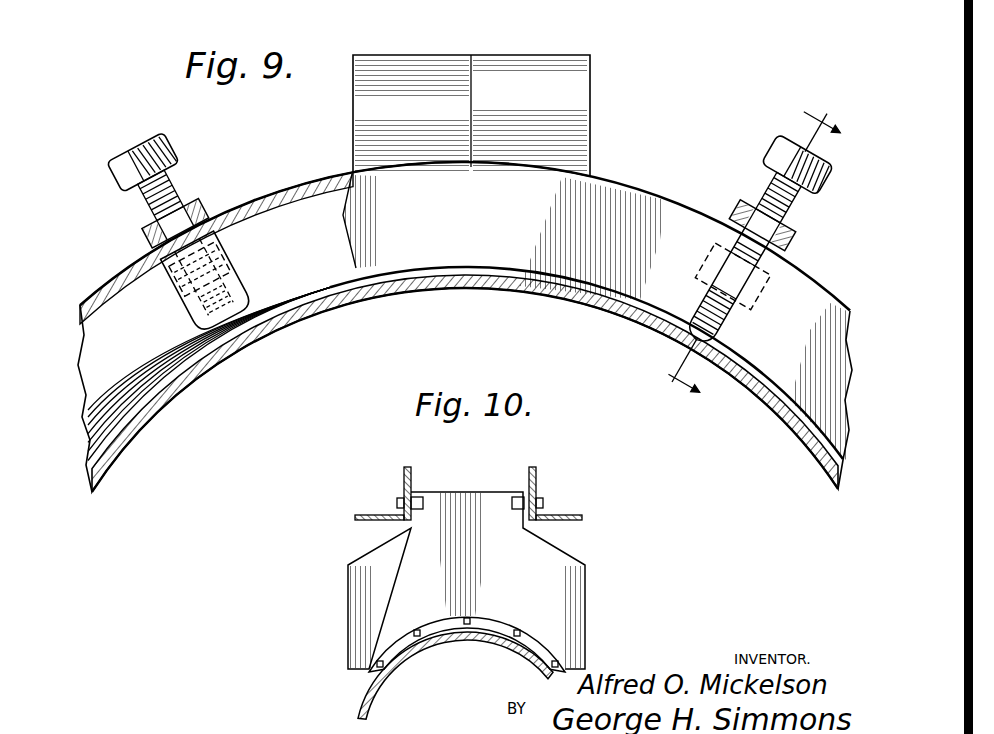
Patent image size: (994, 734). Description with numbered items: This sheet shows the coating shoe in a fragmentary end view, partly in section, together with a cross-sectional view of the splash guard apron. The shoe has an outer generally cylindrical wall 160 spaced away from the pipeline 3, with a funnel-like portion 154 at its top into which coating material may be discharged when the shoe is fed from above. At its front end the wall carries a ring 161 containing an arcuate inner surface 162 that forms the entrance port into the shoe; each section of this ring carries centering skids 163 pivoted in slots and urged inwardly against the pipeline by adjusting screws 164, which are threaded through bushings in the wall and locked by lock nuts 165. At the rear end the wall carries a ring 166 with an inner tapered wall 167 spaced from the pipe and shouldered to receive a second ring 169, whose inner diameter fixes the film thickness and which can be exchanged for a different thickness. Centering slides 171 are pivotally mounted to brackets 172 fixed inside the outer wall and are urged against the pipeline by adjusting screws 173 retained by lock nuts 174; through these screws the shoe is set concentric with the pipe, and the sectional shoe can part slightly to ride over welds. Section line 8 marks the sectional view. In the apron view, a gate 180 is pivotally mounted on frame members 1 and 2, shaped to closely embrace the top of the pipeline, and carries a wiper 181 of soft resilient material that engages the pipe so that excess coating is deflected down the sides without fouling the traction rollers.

In FIG. 9, the funnel-like portion 154 is at (578, 77).
In FIG. 9, the outer cylindrical wall 160 is at (267, 197).
In FIG. 9, the ring 161 is at (620, 197).
In FIG. 9, the arcuate inner surface 162 is at (525, 276).
In FIG. 9, the centering skids 163 is at (737, 323).
In FIG. 9, the adjusting screws 164 is at (788, 151).
In FIG. 9, the lock nuts 165 is at (797, 242).
In FIG. 9, the ring 166 is at (308, 207).
In FIG. 9, the inner tapered wall 167 is at (327, 265).
In FIG. 9, the second ring 169 is at (153, 370).
In FIG. 9, the centering slides 171 is at (250, 346).
In FIG. 9, the brackets 172 is at (177, 305).
In FIG. 9, the adjusting screws 173 is at (155, 148).
In FIG. 9, the lock nuts 174 is at (193, 204).
In FIG. 9, the pipeline 3 is at (307, 320).
In FIG. 10, the pipeline 3 is at (360, 698).
In FIG. 9, the section line 8- 8 is at (718, 237).
In FIG. 10, the frame member 1 is at (402, 473).
In FIG. 10, the frame member 2 is at (537, 473).
In FIG. 10, the gate 180 is at (363, 567).
In FIG. 10, the wiper 181 is at (527, 640).